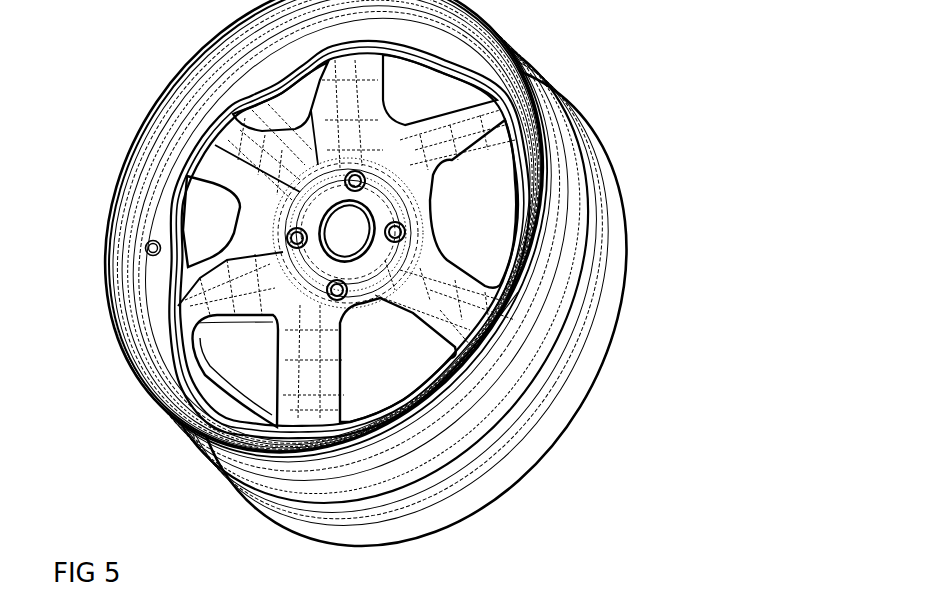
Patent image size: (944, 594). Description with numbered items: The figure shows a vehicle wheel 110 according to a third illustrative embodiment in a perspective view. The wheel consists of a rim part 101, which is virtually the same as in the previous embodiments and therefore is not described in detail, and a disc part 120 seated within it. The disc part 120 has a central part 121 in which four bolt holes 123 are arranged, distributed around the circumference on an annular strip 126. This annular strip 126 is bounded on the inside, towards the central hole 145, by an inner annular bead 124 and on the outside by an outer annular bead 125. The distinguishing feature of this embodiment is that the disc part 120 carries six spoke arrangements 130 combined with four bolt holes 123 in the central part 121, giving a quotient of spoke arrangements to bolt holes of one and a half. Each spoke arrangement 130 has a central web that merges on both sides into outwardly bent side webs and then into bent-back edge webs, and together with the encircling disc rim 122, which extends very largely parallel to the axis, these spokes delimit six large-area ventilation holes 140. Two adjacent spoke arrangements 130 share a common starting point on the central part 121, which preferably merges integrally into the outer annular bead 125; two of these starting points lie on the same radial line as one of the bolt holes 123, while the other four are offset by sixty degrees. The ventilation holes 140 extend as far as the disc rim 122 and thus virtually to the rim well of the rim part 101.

The rim part 101 is at (578, 210).
The vehicle wheel 110 is at (668, 192).
The disc part 120 is at (152, 322).
The central part 121 is at (380, 297).
The disc rim 122 is at (185, 212).
The bolt holes 123 is at (398, 232).
The inner annular bead 124 is at (370, 197).
The outer annular bead 125 is at (305, 205).
The annular strip 126 is at (393, 203).
The spoke arrangements 130 is at (250, 392).
The ventilation holes 140 is at (261, 347).
The central hole 145 is at (355, 245).